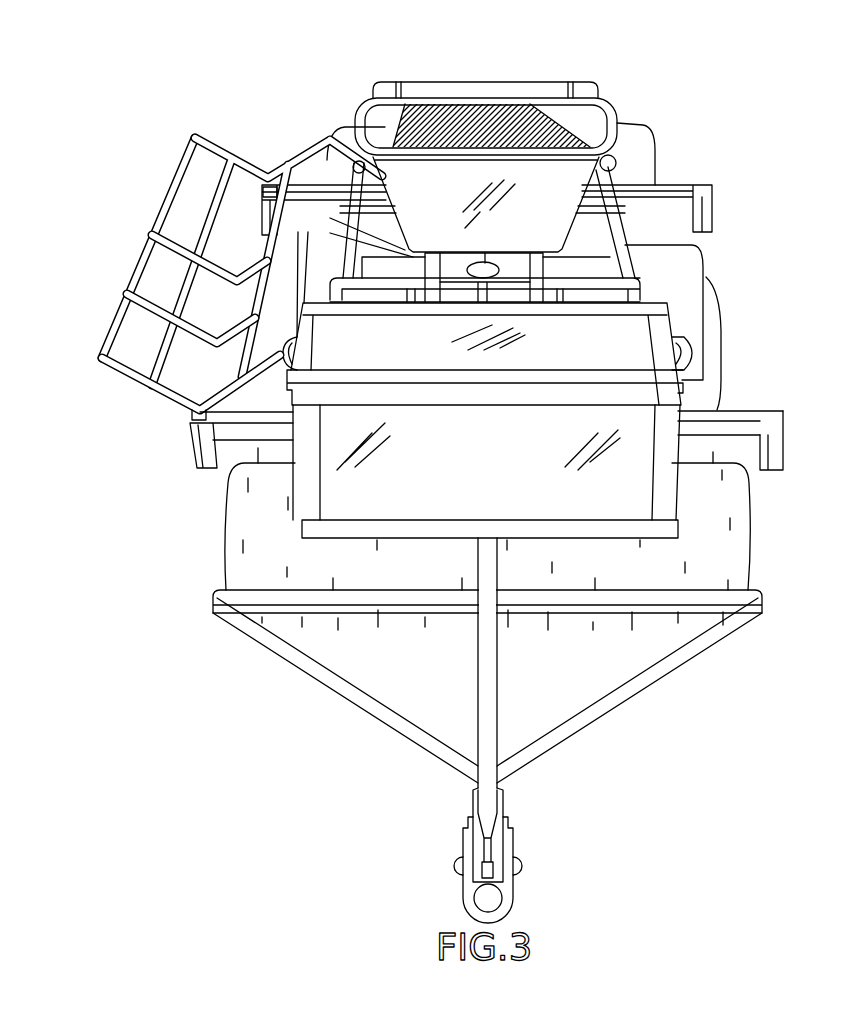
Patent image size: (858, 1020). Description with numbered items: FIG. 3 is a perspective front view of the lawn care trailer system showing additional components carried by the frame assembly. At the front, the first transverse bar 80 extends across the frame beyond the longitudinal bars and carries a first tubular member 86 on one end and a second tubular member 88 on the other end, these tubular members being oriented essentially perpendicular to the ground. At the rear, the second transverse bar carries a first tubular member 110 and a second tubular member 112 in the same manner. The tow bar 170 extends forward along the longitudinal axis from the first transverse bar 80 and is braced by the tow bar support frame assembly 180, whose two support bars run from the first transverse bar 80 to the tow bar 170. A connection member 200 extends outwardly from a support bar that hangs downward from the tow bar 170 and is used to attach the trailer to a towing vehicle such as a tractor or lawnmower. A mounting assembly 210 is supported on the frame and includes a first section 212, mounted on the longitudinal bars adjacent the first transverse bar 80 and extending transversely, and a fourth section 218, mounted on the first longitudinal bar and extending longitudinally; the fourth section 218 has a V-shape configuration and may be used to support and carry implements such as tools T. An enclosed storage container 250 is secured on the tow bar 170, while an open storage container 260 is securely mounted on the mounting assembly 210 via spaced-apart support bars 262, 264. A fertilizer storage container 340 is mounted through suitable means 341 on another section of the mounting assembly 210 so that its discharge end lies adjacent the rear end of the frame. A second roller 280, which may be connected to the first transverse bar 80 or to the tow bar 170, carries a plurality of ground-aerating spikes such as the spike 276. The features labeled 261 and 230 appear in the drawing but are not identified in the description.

The fertilizer storage container 340 is at (476, 96).
The suitable means 341 is at (400, 88).
The open storage container 260 is at (605, 123).
The hopper pivot 261 is at (614, 168).
The support bar 262 is at (545, 258).
The support bar 264 is at (330, 218).
The first section 212 is at (618, 283).
The enclosed storage container 250 is at (482, 448).
The first transverse bar 80 is at (747, 411).
The second tubular member 88 is at (780, 437).
The first tubular member 86 is at (198, 460).
The second roller 280 is at (727, 540).
The ground-aerating spike 276 is at (242, 545).
The mounting assembly 210 is at (203, 295).
The fourth section 218 is at (117, 320).
The tray bottom mount 230 is at (152, 383).
The tools T is at (203, 210).
The first tubular member 110 is at (262, 190).
The second tubular member 112 is at (707, 215).
The tow bar 170 is at (499, 692).
The tow bar support frame assembly 180 is at (372, 706).
The connection member 200 is at (518, 858).